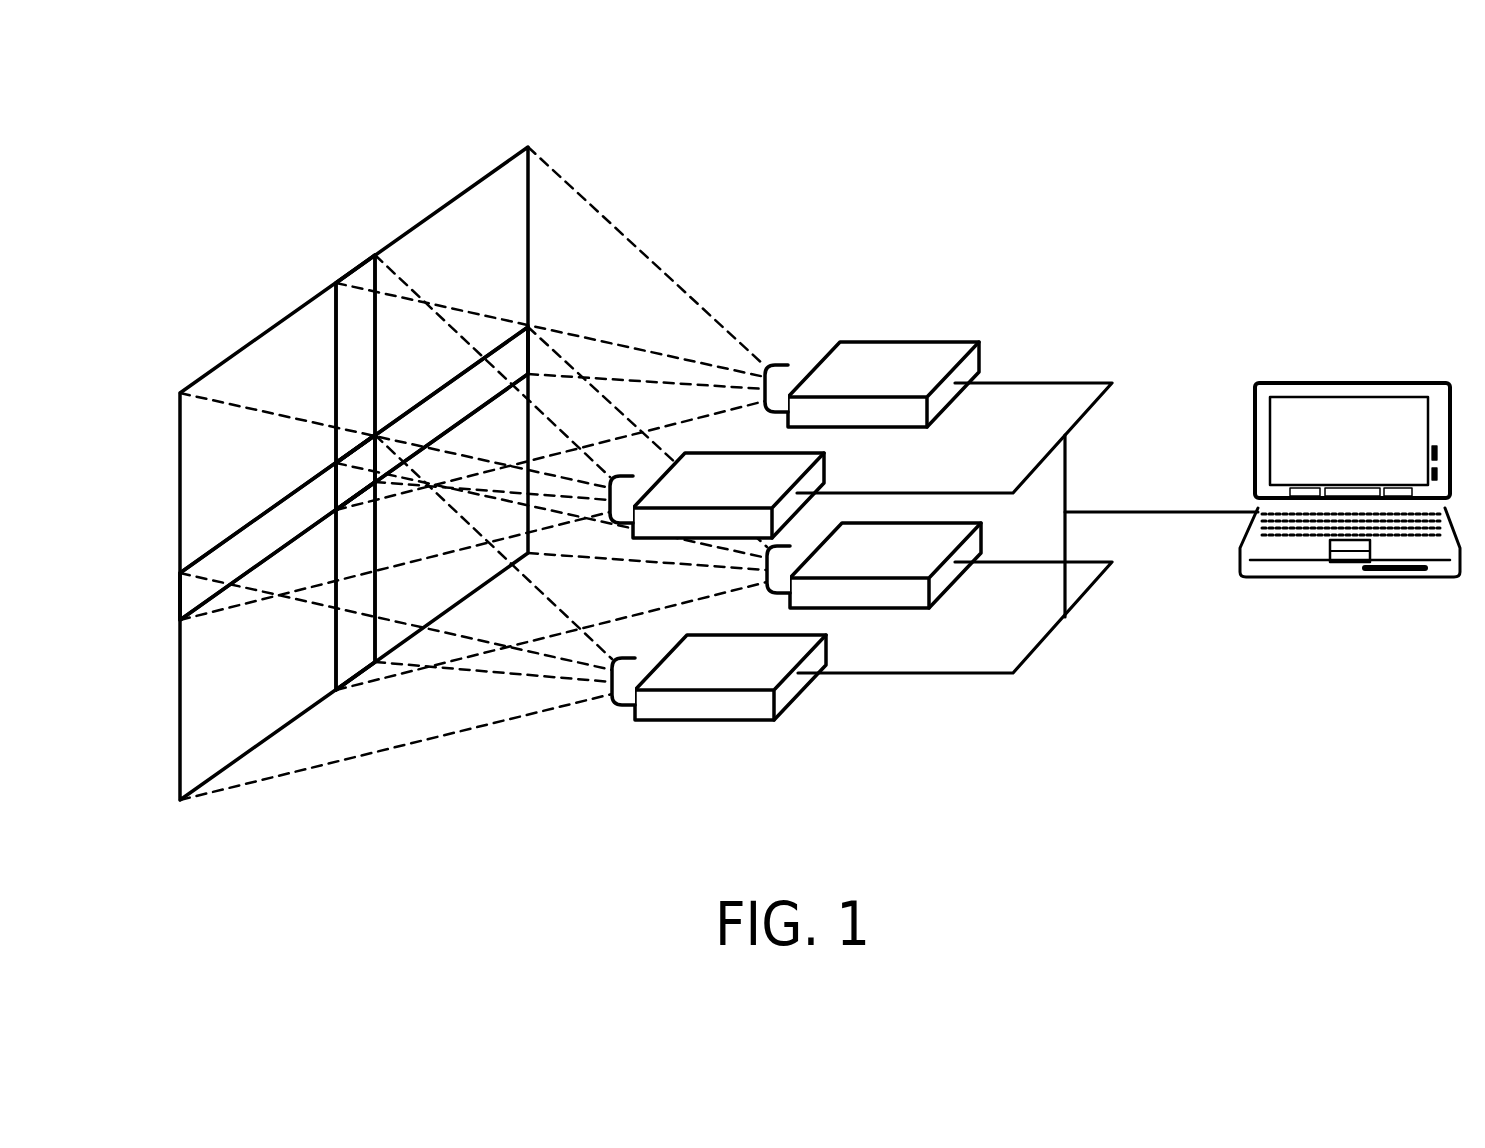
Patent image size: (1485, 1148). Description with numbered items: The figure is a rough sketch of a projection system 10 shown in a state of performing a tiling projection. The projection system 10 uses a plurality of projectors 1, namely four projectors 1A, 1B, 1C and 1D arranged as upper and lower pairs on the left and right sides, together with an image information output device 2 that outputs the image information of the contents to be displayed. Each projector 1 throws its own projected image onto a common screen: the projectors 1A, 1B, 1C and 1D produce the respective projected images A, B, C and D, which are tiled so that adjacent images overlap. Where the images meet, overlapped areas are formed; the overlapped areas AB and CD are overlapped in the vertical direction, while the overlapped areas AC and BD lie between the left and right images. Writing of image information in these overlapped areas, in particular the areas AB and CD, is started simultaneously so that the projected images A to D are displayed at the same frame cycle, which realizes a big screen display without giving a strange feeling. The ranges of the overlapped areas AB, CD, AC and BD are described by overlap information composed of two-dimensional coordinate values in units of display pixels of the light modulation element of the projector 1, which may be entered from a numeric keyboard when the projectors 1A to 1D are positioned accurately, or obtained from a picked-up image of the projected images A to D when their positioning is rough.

The projection system 10 is at (785, 433).
The projector 1 is at (795, 530).
The projector 1A is at (782, 460).
The projector 1B is at (715, 710).
The projector 1C is at (920, 350).
The projector 1D is at (880, 597).
The image information output device 2 is at (1347, 577).
The projected image A is at (190, 466).
The projected image B is at (194, 710).
The projected image C is at (503, 243).
The projected image D is at (503, 410).
The overlapped area AB is at (190, 586).
The overlapped area AC is at (350, 297).
The overlapped area BD is at (360, 660).
The overlapped area CD is at (511, 360).